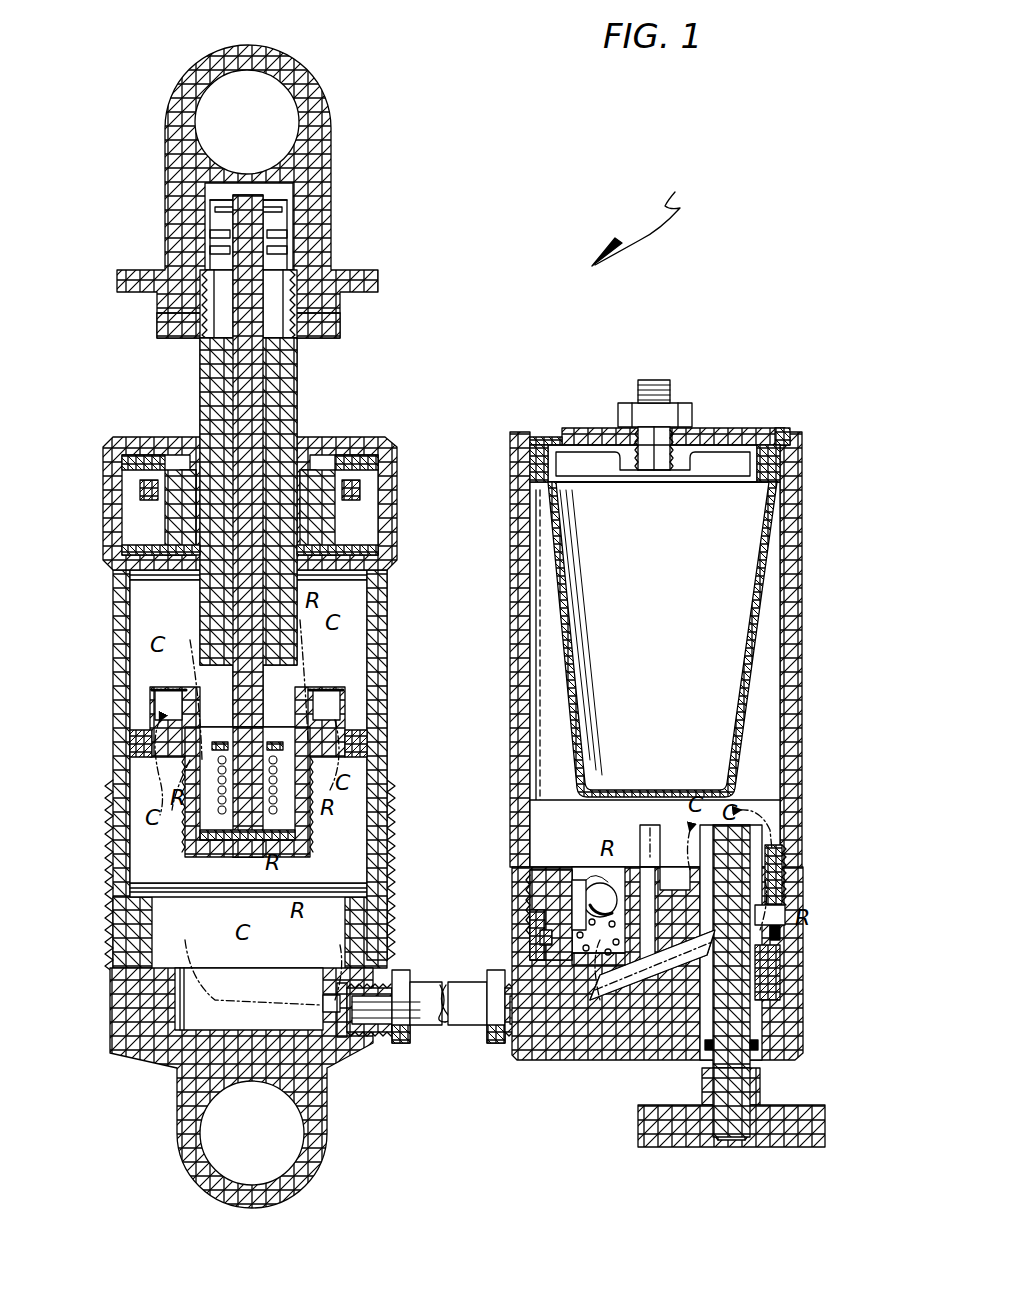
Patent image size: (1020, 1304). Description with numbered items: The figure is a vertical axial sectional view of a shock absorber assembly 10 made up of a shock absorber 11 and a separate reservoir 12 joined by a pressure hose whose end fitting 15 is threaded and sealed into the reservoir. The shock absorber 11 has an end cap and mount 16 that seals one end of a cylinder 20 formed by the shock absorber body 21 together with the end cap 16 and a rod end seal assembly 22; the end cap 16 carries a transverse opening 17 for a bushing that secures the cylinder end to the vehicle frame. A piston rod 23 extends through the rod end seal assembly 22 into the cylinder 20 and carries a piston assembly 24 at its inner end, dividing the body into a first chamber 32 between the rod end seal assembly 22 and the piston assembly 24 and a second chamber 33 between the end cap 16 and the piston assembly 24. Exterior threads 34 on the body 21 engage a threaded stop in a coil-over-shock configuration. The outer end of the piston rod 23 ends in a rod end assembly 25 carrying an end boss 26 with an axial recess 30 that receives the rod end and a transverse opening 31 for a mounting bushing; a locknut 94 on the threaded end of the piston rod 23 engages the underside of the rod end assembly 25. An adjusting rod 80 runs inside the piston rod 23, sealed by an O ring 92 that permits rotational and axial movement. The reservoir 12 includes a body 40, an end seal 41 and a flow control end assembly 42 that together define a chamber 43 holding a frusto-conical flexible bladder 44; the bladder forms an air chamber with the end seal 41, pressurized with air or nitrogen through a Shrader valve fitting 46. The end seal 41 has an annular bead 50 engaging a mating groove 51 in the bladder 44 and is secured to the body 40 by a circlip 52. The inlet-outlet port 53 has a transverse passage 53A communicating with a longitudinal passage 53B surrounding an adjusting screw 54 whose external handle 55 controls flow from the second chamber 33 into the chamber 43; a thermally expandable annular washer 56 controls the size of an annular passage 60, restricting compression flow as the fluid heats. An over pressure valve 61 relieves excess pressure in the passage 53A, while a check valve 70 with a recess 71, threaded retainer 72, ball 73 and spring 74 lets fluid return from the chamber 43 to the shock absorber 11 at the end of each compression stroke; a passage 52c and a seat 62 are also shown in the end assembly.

The shock absorber assembly 10 is at (642, 216).
The shock absorber 11 is at (112, 632).
The reservoir 12 is at (509, 550).
The end fitting 15 is at (515, 1035).
The end cap and mount 16 is at (133, 1060).
The transverse opening 17 is at (218, 1145).
The cylinder 20 is at (152, 778).
The shock absorber body 21 is at (112, 684).
The rod end seal assembly 22 is at (323, 447).
The piston rod 23 is at (302, 380).
The piston assembly 24 is at (320, 690).
The rod end assembly 25 is at (345, 138).
The end boss 26 is at (350, 190).
The axial recess 30 is at (295, 232).
The transverse opening 31 is at (300, 112).
The first chamber 32 is at (372, 600).
The second chamber 33 is at (358, 830).
The exterior threads 34 is at (112, 866).
The reservoir body 40 is at (803, 690).
The end seal 41 is at (700, 428).
The flow control end assembly 42 is at (805, 994).
The chamber 43 is at (770, 780).
The flexible bladder 44 is at (770, 640).
The Shrader valve fitting 46 is at (672, 392).
The annular bead 50 is at (782, 445).
The mating groove 51 is at (780, 478).
The circlip 52 is at (790, 430).
The compression passage 52c is at (668, 830).
The inlet-outlet port 53 is at (572, 1040).
The transverse passage 53A is at (625, 985).
The longitudinal passage 53B is at (760, 950).
The adjusting screw 54 is at (732, 572).
The external handle 55 is at (826, 1122).
The annular washer 56 is at (785, 868).
The annular passage 60 is at (790, 912).
The over pressure valve 61 is at (604, 884).
The valve seat 62 is at (575, 882).
The check valve 70 is at (555, 870).
The recess 71 is at (580, 934).
The threaded retainer 72 is at (560, 900).
The ball 73 is at (572, 958).
The spring 74 is at (590, 966).
The adjusting rod 80 is at (233, 370).
The O ring 92 is at (270, 402).
The locknut 94 is at (340, 330).